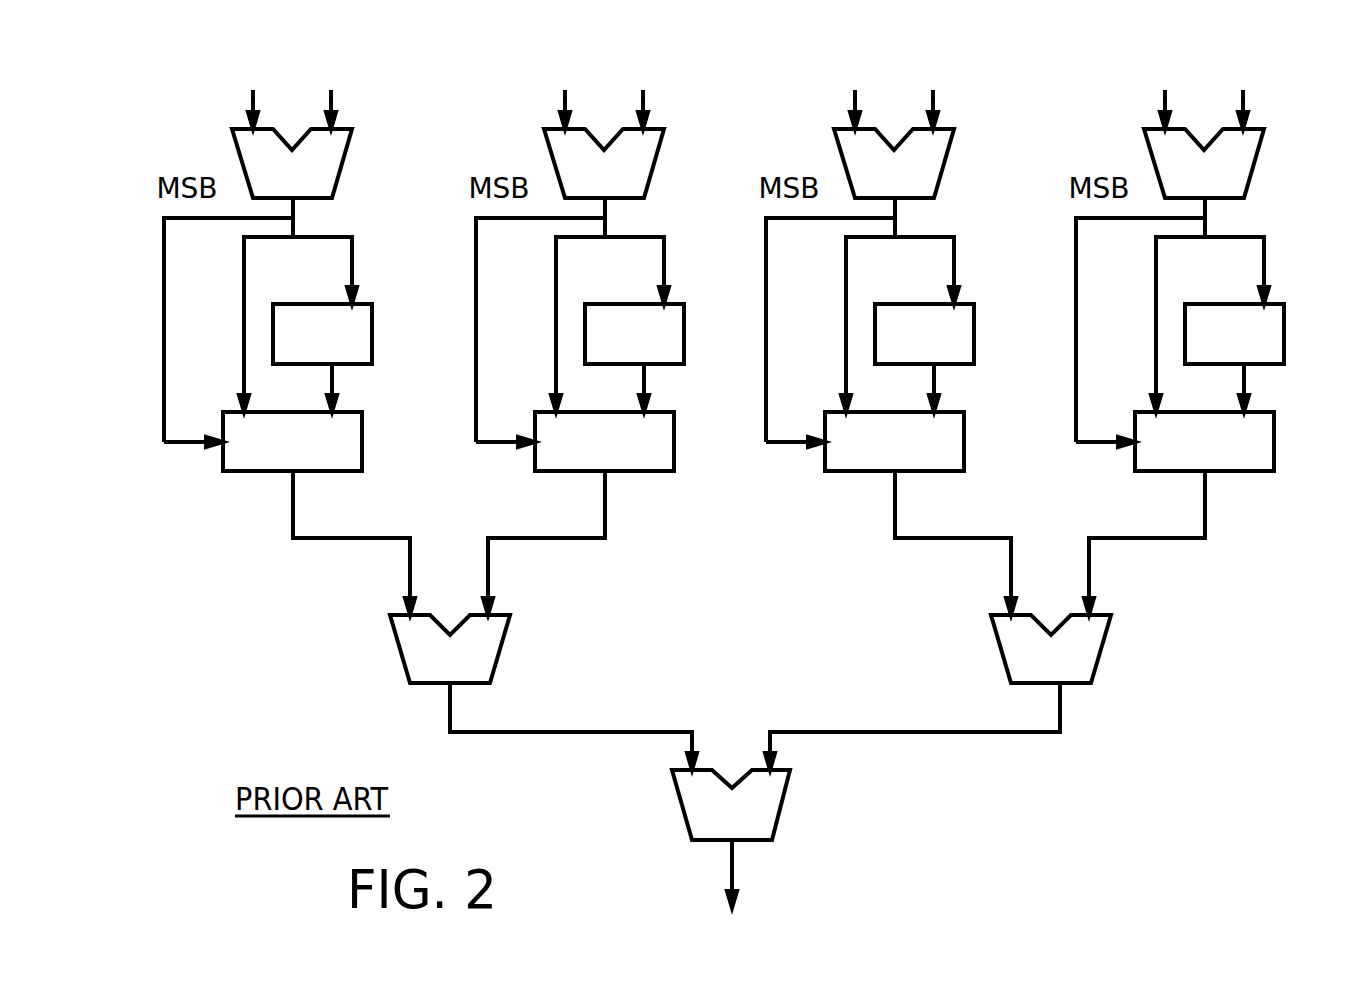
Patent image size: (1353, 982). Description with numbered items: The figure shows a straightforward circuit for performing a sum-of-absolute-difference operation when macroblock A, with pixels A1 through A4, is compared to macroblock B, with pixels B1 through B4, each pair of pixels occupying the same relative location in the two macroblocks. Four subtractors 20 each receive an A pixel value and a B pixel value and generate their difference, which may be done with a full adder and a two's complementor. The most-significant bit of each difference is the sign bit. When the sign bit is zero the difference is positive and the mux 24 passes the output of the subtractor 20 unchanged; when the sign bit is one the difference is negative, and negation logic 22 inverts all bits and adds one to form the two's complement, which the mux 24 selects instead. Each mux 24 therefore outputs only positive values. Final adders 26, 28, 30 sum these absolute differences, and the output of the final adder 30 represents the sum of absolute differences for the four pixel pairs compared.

The subtractor 20 is at (341, 169).
The negation logic 22 is at (372, 336).
The mux 24 is at (274, 460).
The final adder 26 is at (499, 654).
The final adder 28 is at (1100, 654).
The final adder 30 is at (782, 811).